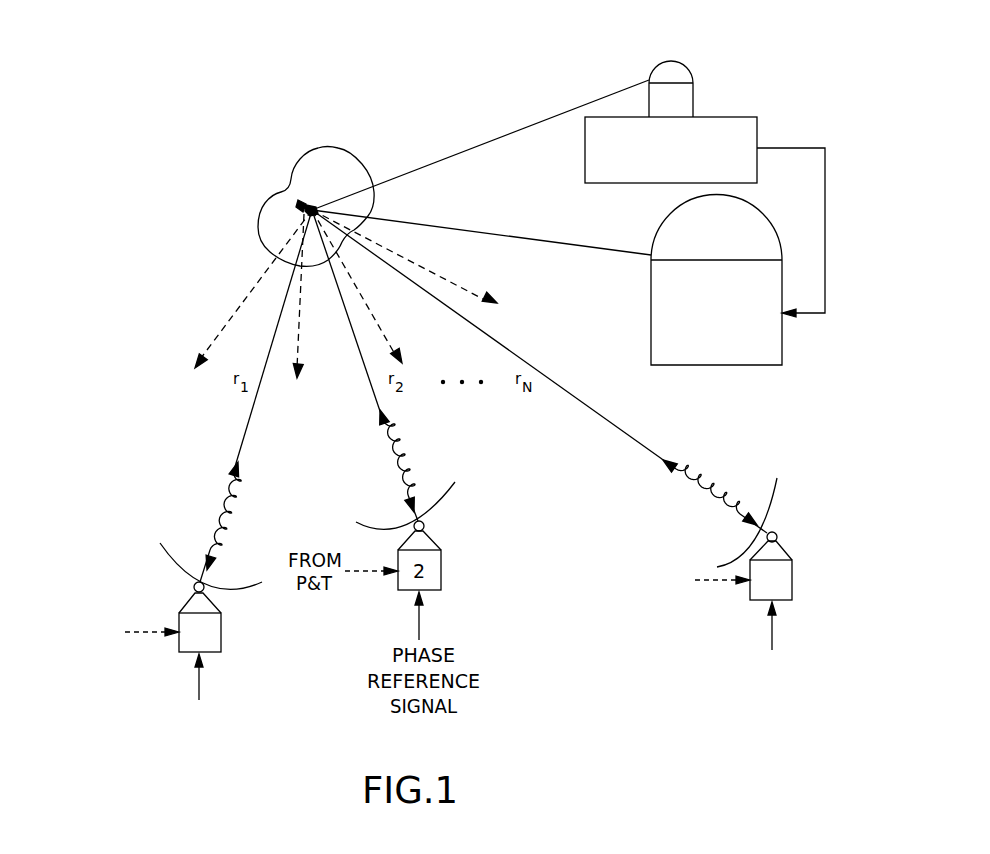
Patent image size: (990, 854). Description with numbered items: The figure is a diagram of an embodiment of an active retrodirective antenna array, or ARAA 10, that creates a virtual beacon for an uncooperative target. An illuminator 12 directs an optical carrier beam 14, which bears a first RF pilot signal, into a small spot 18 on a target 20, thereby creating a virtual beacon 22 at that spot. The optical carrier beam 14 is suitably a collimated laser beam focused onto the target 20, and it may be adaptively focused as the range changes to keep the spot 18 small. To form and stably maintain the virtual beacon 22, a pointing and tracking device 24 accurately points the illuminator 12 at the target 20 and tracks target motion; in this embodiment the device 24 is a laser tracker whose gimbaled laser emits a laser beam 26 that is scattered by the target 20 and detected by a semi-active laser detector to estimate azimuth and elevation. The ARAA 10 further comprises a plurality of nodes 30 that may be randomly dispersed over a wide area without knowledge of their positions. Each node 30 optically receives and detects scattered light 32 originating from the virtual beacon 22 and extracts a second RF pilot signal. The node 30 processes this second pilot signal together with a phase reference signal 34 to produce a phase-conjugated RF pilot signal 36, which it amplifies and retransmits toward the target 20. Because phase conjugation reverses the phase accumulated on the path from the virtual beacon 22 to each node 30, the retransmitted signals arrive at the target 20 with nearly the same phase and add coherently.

The ARAA 10 is at (938, 145).
The illuminator 12 is at (786, 338).
The optical carrier beam 14 is at (520, 236).
The spot 18 is at (302, 192).
The target 20 is at (370, 165).
The virtual beacon 22 is at (292, 205).
The pointing and tracking device 24 is at (700, 102).
The laser beam 26 is at (475, 150).
The node 30 is at (797, 580).
The scattered light 32 is at (218, 297).
The phase reference signal 34 is at (211, 802).
The phase-conjugated RF pilot signal 36 is at (207, 508).